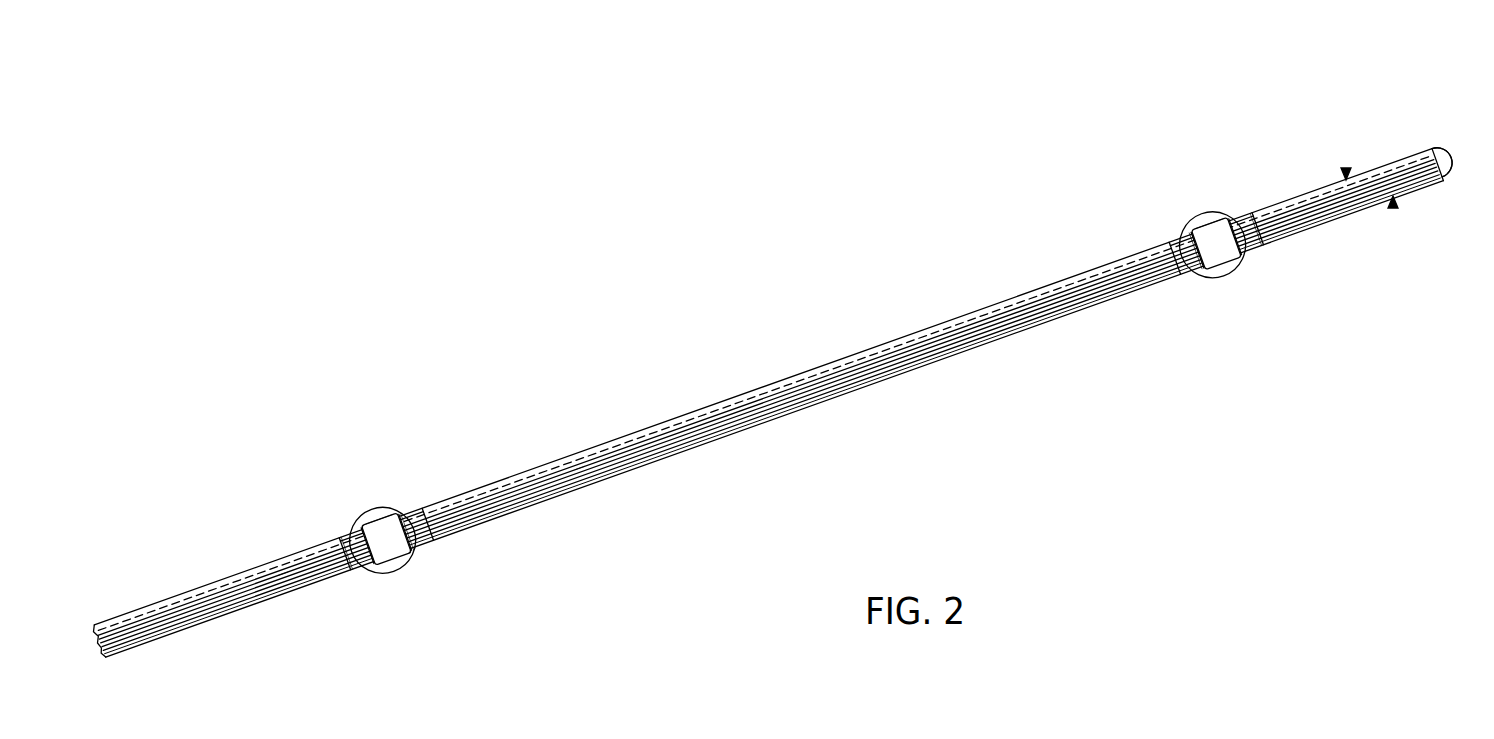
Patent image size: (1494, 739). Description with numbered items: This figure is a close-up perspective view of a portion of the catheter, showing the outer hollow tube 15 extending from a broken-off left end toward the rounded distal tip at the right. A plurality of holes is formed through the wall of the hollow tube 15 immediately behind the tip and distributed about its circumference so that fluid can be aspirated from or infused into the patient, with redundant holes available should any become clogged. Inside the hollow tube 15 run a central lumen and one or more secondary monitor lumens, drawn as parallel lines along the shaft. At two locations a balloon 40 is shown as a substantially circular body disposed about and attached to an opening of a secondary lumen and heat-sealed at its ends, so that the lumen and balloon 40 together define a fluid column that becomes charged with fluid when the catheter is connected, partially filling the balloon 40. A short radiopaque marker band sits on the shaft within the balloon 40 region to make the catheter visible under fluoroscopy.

The hollow tube 15 is at (774, 401).
The balloon 40 is at (791, 371).